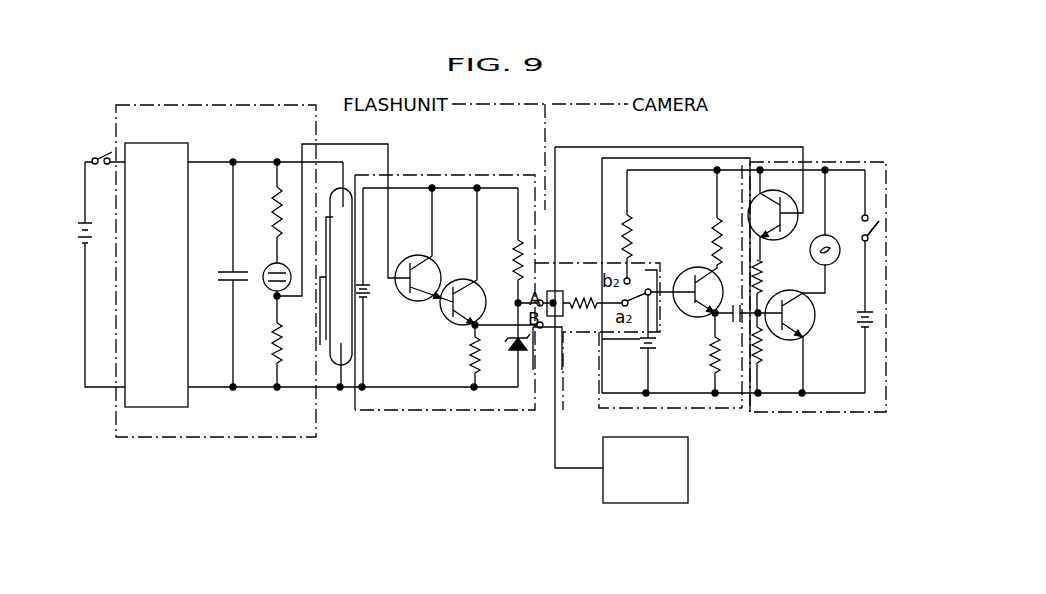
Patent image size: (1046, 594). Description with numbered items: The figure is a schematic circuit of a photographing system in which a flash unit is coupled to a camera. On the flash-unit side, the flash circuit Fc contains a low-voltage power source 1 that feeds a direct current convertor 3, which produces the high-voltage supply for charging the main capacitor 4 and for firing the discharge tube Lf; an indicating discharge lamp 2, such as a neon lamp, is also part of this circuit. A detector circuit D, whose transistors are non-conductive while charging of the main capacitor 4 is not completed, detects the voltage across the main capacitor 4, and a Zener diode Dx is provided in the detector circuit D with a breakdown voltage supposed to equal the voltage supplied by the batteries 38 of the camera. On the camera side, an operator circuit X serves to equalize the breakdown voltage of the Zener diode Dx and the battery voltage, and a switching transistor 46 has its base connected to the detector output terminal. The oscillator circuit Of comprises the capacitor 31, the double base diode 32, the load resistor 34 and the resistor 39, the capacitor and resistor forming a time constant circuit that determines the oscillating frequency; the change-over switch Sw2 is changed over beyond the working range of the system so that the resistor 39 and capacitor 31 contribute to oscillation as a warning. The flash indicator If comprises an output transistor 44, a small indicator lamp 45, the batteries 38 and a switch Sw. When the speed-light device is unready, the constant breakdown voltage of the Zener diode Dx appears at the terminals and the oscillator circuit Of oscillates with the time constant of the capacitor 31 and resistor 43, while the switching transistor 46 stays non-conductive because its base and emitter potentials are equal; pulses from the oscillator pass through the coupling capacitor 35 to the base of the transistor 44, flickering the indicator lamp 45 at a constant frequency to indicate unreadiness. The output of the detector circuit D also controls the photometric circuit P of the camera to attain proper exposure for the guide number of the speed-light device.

The power source 1 is at (83, 222).
The indicating discharge lamp 2 is at (268, 295).
The direct current convertor 3 is at (164, 147).
The main capacitor 4 is at (233, 270).
The capacitor 31 is at (637, 358).
The double base diode 32 is at (683, 270).
The load resistor 34 is at (711, 341).
The coupling capacitor 35 is at (735, 323).
The batteries 38 is at (860, 325).
The resistor 39 is at (629, 238).
The resistor 43 is at (580, 300).
The output transistor 44 is at (810, 328).
The indicator lamp 45 is at (828, 237).
The switching transistor 46 is at (771, 190).
The discharge tube Lf is at (338, 207).
The detector circuit D is at (447, 183).
The Zener diode Dx is at (511, 354).
The operator circuit X is at (548, 292).
The switch Sw is at (877, 226).
The change-over switch Sw2 is at (638, 308).
The flash circuit Fc is at (250, 434).
The oscillator circuit Of is at (690, 410).
The flash indicator If is at (815, 406).
The photometric circuit P is at (652, 490).